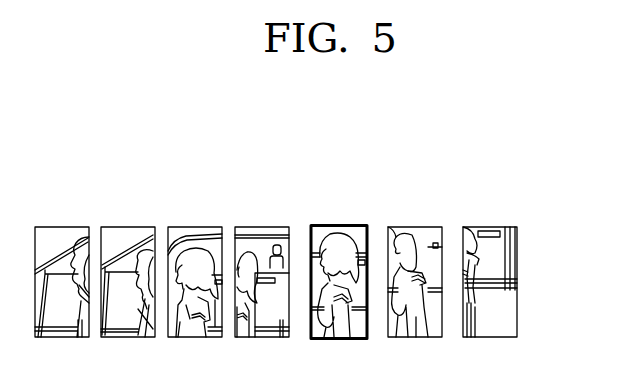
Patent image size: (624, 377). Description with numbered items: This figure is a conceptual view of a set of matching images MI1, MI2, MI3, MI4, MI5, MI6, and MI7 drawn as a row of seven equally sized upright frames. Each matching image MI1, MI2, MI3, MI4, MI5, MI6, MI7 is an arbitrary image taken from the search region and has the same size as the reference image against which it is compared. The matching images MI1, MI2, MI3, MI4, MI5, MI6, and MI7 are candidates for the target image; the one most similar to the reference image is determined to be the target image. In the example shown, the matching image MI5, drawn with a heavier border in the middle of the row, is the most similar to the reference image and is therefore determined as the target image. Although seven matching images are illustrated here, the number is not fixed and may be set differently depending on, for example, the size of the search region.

The matching image MI1 is at (61, 227).
The matching image MI2 is at (127, 227).
The matching image MI3 is at (194, 227).
The matching image MI4 is at (262, 227).
The matching image MI5 is at (338, 227).
The matching image MI6 is at (411, 227).
The matching image MI7 is at (489, 227).